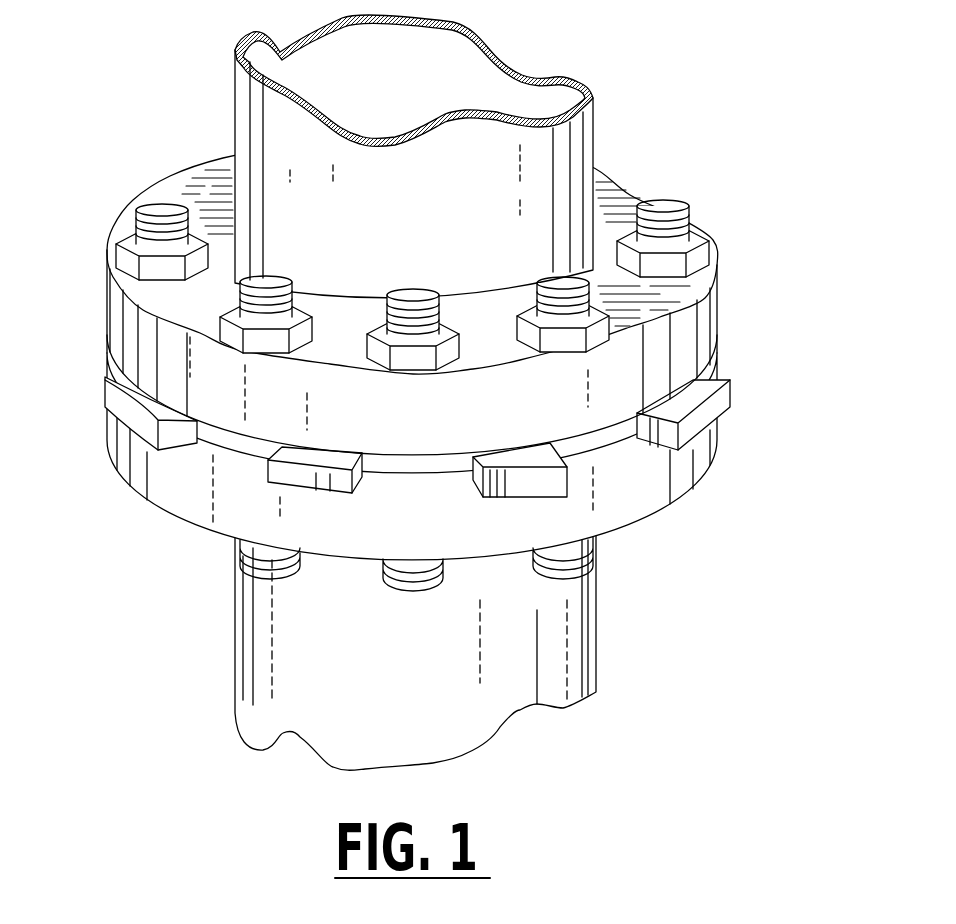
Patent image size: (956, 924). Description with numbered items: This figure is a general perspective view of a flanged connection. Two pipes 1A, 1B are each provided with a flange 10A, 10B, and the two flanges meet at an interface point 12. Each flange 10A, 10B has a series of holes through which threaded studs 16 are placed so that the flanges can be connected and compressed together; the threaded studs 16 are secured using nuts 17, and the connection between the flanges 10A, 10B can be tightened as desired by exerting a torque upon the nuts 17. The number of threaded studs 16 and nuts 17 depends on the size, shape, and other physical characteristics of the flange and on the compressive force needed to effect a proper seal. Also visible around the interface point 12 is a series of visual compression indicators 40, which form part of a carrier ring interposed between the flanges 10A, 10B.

The pipe 1A is at (436, 229).
The pipe 1B is at (440, 675).
The flange 10A is at (703, 334).
The flange 10B is at (703, 447).
The interface point 12 is at (435, 368).
The threaded studs 16 is at (265, 279).
The nuts 17 is at (240, 333).
The visual compression indicators 40 is at (290, 477).